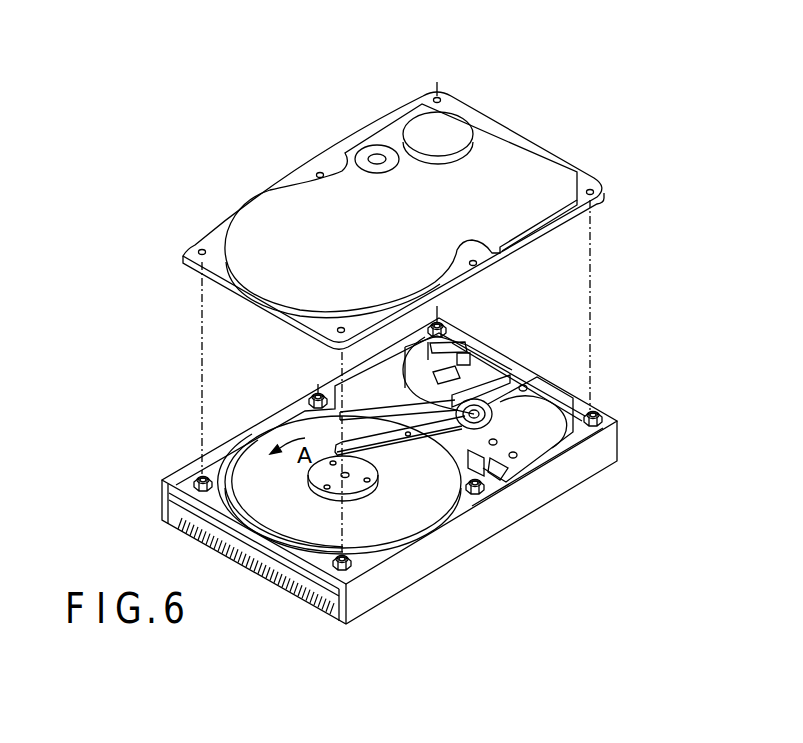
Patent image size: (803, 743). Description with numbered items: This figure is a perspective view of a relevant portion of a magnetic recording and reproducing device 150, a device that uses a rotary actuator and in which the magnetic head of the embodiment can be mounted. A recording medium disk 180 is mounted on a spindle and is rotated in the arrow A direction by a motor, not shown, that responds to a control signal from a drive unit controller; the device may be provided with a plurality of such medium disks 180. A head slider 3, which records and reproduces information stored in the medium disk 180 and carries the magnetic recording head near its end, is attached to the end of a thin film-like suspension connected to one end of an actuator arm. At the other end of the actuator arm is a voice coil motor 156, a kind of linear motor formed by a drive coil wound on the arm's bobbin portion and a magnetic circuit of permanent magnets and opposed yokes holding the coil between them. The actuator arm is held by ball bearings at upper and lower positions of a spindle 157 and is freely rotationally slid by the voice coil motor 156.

The magnetic recording and reproducing device 150 is at (290, 142).
The recording medium disk 180 is at (253, 455).
The head slider 3 is at (338, 446).
The spindle 157 is at (476, 410).
The voice coil motor 156 is at (526, 445).